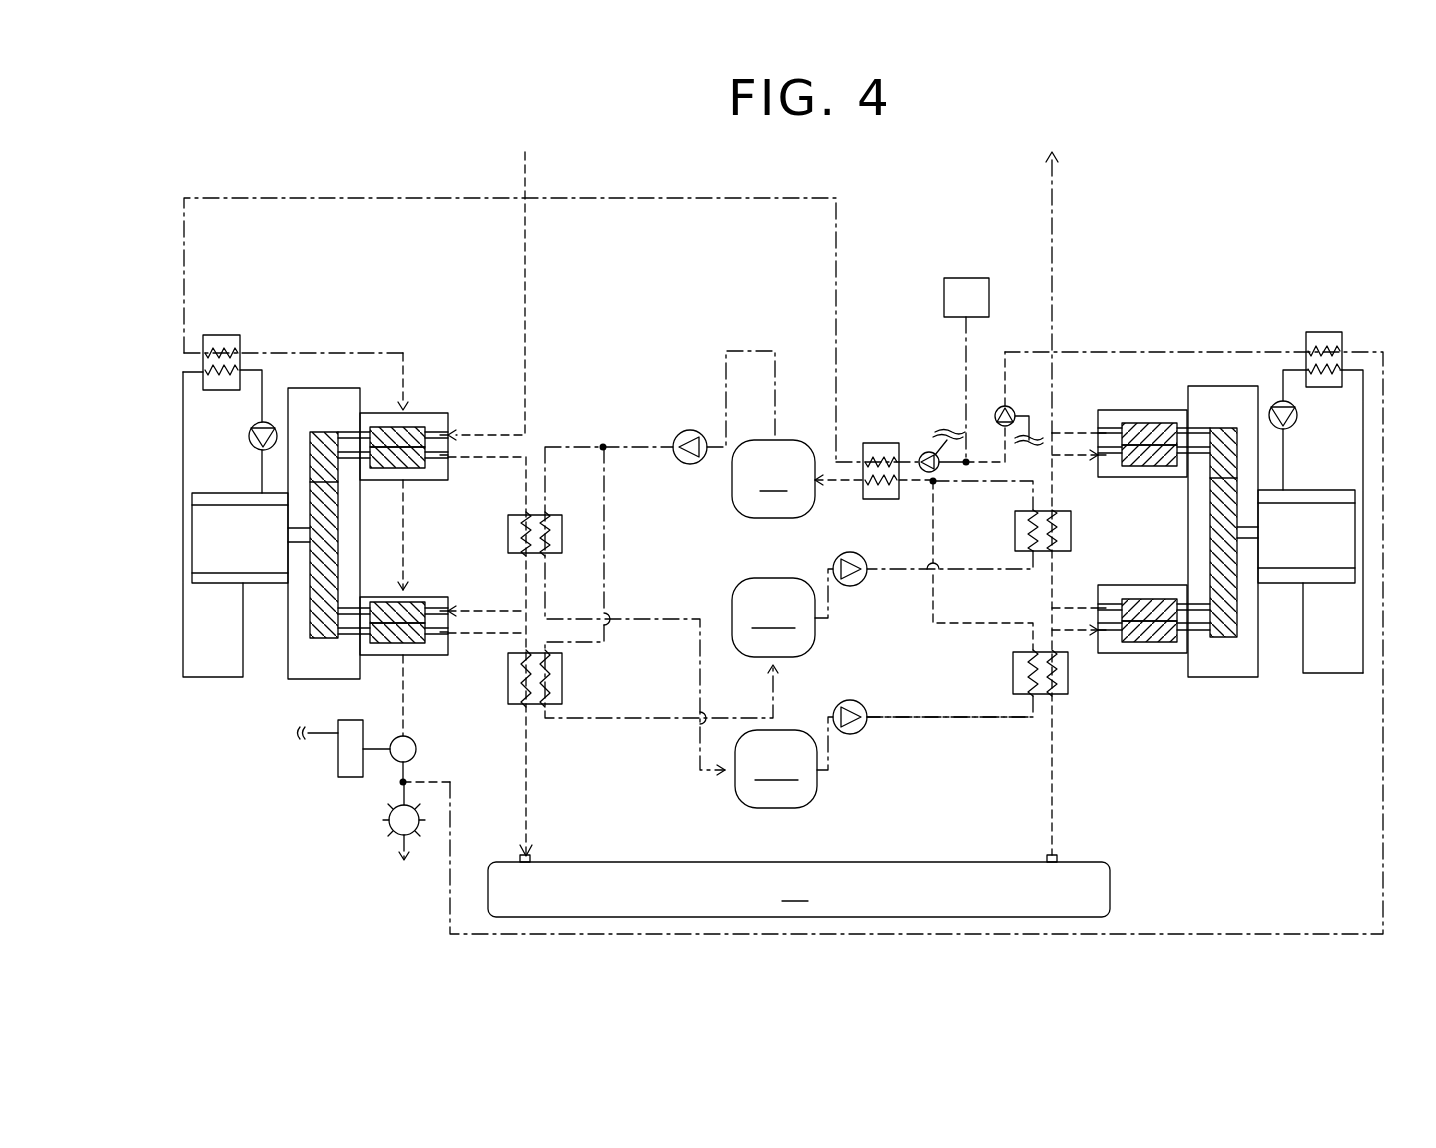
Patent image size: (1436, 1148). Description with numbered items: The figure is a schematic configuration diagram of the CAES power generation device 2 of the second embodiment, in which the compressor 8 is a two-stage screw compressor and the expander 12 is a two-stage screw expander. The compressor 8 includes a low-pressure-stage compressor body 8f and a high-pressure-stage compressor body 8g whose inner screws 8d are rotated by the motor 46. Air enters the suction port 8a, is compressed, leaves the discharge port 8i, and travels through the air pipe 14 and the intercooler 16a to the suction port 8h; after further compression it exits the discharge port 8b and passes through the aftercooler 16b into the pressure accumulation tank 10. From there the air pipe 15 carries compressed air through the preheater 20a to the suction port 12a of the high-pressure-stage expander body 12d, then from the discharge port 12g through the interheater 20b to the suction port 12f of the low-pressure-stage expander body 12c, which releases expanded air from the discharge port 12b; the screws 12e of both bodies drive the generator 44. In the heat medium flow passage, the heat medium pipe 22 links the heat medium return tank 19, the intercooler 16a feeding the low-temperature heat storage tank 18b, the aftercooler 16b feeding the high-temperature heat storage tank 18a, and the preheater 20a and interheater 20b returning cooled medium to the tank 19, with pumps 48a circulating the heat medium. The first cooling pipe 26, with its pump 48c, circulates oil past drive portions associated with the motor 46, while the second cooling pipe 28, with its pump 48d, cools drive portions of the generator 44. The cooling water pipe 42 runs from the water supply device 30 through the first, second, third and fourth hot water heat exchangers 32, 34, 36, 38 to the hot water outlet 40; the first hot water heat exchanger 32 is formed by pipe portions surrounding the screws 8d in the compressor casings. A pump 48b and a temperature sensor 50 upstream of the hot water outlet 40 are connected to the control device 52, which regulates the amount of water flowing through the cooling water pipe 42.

The CAES power generation device 2 is at (1232, 764).
The compressor 8 is at (290, 678).
The suction port 8a is at (452, 430).
The discharge port 8b is at (450, 637).
The screw 8d is at (390, 470).
The low-pressure-stage compressor body 8f is at (426, 480).
The high-pressure-stage compressor body 8g is at (430, 597).
The suction port 8h is at (452, 630).
The discharge port 8i is at (452, 458).
The pressure accumulation tank 10 is at (799, 889).
The expander 12 is at (1258, 677).
The suction port 12a is at (1094, 637).
The discharge port 12b is at (1094, 433).
The low-pressure-stage expander body 12c is at (1152, 478).
The high-pressure-stage expander body 12d is at (1150, 585).
The screw 12e is at (1160, 430).
The suction port 12f is at (1094, 460).
The discharge port 12g is at (1094, 608).
The air pipe 14 is at (527, 290).
The air pipe 15 is at (1050, 205).
The intercooler 16a is at (562, 530).
The aftercooler 16b is at (562, 677).
The high-temperature heat storage tank 18a is at (782, 613).
The low-temperature heat storage tank 18b is at (784, 762).
The heat medium return tank 19 is at (777, 479).
The preheater 20a is at (1013, 672).
The interheater 20b is at (1015, 530).
The heat medium pipe 22 is at (940, 718).
The first cooling pipe 26 is at (262, 472).
The second cooling pipe 28 is at (1363, 412).
The water supply device 30 is at (944, 300).
The first hot water heat exchanger 32 is at (406, 410).
The second hot water heat exchanger 34 is at (241, 345).
The third hot water heat exchanger 36 is at (1322, 332).
The fourth hot water heat exchanger 38 is at (882, 443).
The hot water outlet 40 is at (386, 822).
The cooling water pipe 42 is at (722, 200).
The generator 44 is at (1332, 584).
The motor 46 is at (226, 590).
The pump 48a is at (690, 465).
The pump 48b is at (925, 452).
The pump 48c is at (252, 428).
The pump 48d is at (1290, 428).
The temperature sensor 50 is at (418, 749).
The control device 52 is at (336, 762).